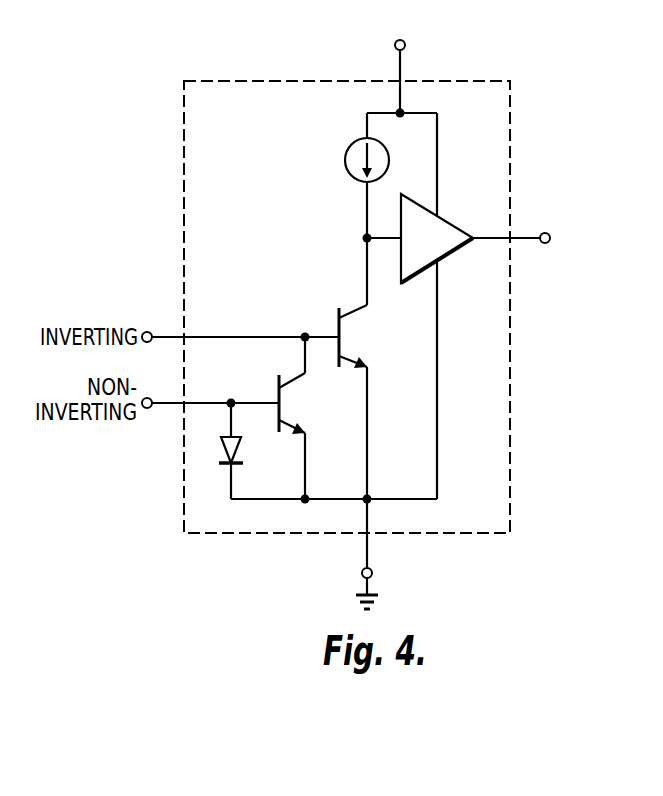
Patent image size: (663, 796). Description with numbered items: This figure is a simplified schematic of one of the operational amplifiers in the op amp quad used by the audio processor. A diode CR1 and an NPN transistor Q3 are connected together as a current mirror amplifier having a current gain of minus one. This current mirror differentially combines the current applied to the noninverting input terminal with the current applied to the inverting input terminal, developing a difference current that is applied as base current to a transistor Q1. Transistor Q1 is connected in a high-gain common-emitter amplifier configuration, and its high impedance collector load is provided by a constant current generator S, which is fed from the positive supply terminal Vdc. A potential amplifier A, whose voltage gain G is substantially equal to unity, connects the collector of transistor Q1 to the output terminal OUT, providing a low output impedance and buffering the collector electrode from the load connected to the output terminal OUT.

The DC supply voltage terminal Vdc is at (403, 59).
The constant current generator S is at (358, 160).
The potential amplifier A is at (451, 220).
The output terminal OUT is at (534, 238).
The transistor Q1 is at (358, 402).
The NPN transistor Q3 is at (296, 418).
The diode CR1 is at (249, 451).